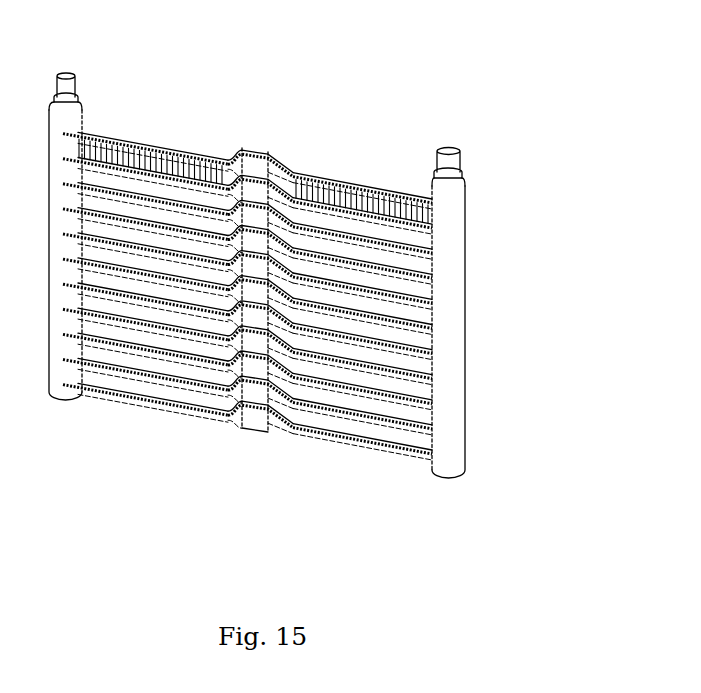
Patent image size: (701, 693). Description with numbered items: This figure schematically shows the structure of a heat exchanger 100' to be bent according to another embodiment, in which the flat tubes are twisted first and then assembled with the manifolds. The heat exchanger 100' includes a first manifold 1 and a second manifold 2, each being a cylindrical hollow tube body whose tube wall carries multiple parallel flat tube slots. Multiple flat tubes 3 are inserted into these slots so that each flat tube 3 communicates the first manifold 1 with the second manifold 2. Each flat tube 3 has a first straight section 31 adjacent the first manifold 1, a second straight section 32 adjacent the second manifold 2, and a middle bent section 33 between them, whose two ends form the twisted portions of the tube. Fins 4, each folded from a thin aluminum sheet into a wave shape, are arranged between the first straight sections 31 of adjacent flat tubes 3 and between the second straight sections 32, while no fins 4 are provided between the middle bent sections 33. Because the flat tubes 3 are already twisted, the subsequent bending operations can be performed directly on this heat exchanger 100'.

The heat exchanger to be bent 100' is at (279, 252).
The first manifold 1 is at (73, 110).
The second manifold 2 is at (457, 189).
The flat tube 3 is at (137, 141).
The first straight section 31 is at (172, 147).
The second straight section 32 is at (327, 175).
The middle bent section 33 is at (255, 190).
The fins 4 is at (105, 145).